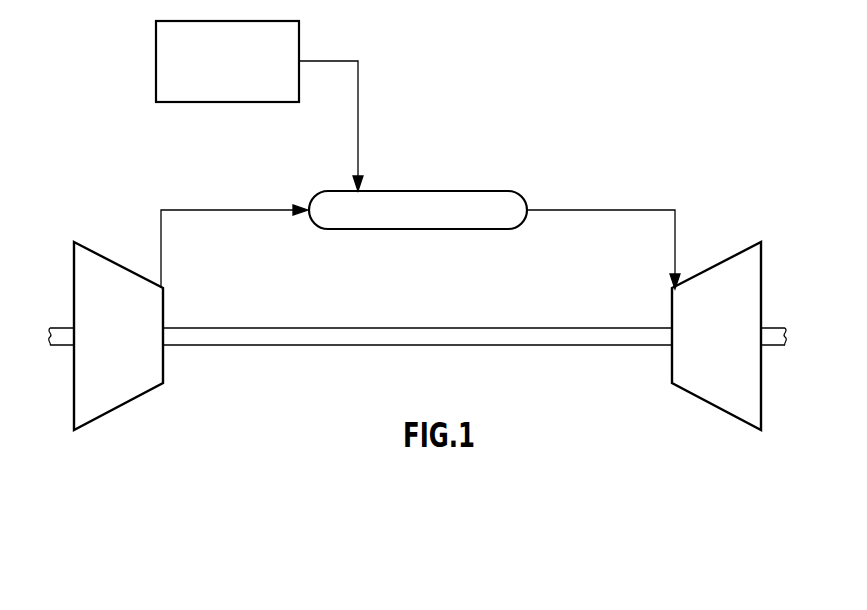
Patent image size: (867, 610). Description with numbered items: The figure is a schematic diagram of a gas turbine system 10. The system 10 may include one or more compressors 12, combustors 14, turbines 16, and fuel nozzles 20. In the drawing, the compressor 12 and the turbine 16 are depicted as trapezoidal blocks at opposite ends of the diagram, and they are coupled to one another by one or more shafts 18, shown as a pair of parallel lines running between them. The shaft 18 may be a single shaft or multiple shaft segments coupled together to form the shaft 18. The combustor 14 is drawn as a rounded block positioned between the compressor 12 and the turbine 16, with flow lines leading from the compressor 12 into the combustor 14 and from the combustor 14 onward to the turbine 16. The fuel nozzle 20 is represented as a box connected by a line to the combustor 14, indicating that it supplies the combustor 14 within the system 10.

The gas turbine system 10 is at (655, 135).
The compressor 12 is at (120, 407).
The combustor 14 is at (430, 191).
The turbine 16 is at (762, 273).
The shaft 18 is at (440, 345).
The fuel nozzle 20 is at (300, 32).